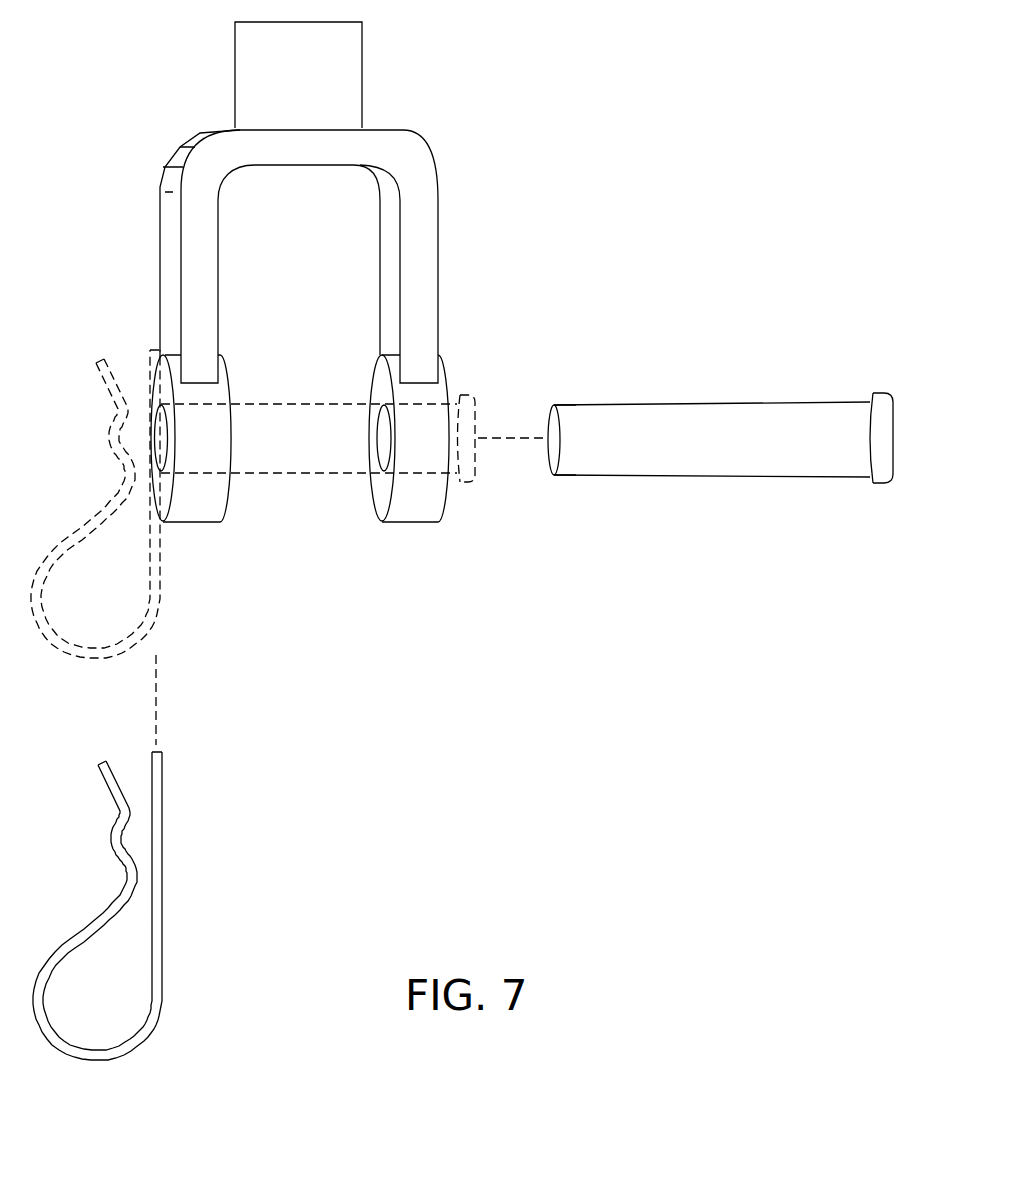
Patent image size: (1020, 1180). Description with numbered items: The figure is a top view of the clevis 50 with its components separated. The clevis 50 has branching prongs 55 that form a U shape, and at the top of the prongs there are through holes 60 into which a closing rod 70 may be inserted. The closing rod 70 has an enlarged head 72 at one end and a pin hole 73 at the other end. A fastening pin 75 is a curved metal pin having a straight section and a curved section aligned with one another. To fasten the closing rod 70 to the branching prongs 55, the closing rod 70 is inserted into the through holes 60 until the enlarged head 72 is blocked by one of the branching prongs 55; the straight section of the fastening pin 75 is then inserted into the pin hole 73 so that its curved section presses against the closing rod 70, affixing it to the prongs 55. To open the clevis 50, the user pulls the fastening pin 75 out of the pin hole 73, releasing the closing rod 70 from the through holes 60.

The clevis 50 is at (598, 112).
The branching prongs 55 is at (195, 252).
The through hole 60 is at (163, 440).
The closing rod 70 is at (707, 416).
The enlarged head 72 is at (876, 392).
The pin hole 73 is at (571, 400).
The fastening pin 75 is at (163, 852).